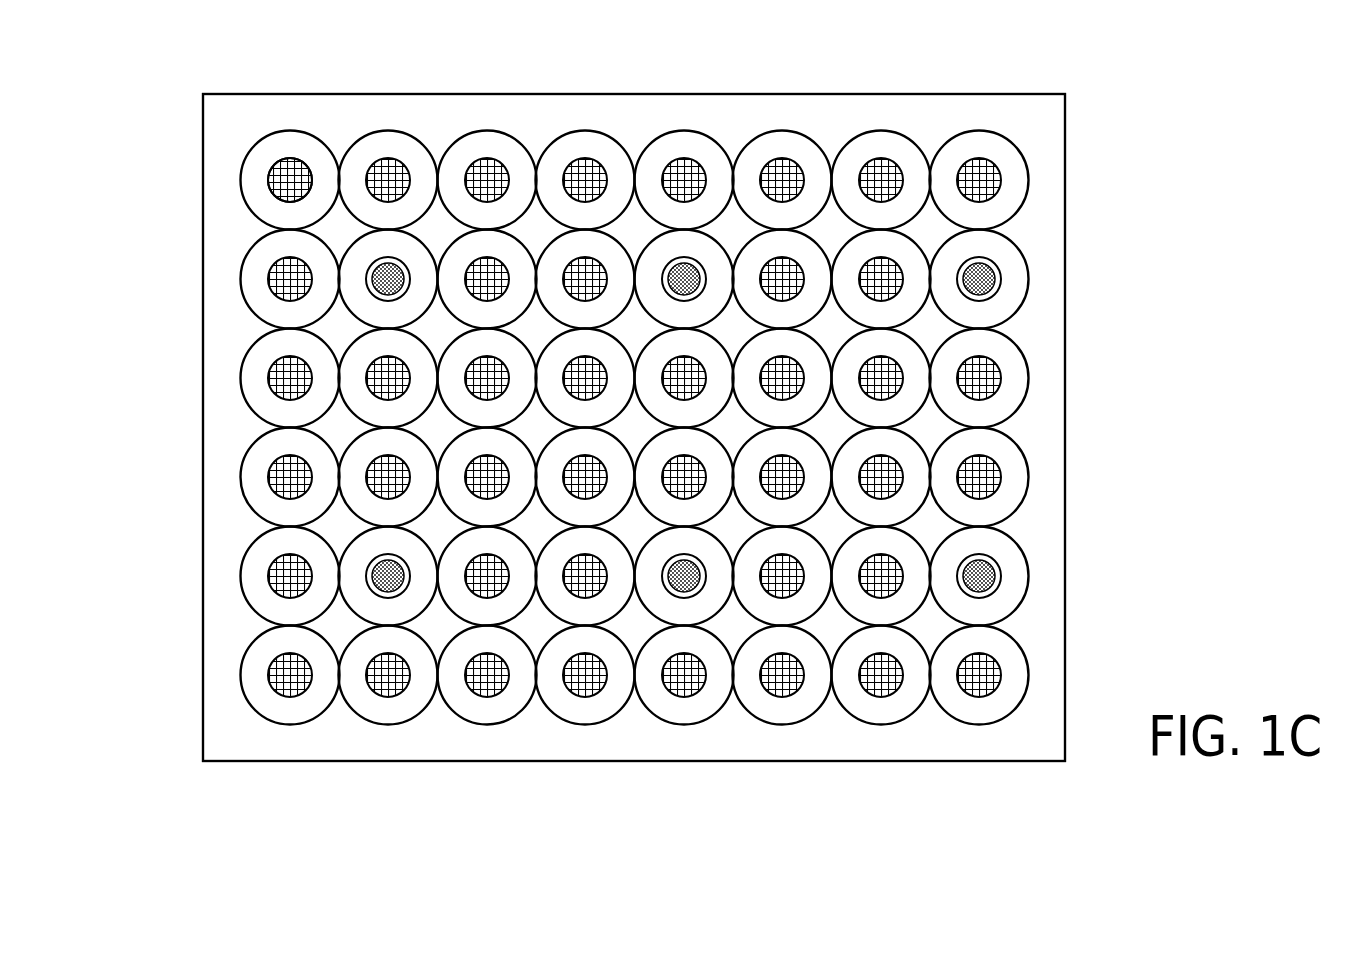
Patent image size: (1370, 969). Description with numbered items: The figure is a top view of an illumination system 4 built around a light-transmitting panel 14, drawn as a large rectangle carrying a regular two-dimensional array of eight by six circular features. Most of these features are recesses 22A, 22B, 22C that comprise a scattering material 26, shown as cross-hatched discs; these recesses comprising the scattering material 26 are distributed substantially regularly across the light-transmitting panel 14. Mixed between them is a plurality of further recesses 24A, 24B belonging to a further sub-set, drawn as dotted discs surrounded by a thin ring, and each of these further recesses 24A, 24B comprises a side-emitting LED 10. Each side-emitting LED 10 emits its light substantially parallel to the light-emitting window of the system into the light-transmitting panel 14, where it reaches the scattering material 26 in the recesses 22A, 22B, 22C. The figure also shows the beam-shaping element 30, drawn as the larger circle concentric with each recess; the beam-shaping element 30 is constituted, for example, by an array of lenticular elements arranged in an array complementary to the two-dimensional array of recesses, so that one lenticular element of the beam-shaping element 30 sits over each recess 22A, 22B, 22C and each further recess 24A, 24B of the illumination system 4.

The illumination system 4 is at (802, 78).
The light-transmitting panel 14 is at (582, 108).
The beam-shaping element 30 is at (243, 165).
The scattering material 26 is at (268, 188).
The recess comprising scattering material 22A is at (292, 168).
The recess comprising scattering material 22B is at (390, 168).
The recess comprising scattering material 22C is at (487, 170).
The further recess 24A is at (368, 279).
The further recess 24B is at (684, 258).
The side-emitting LED 10 is at (380, 291).